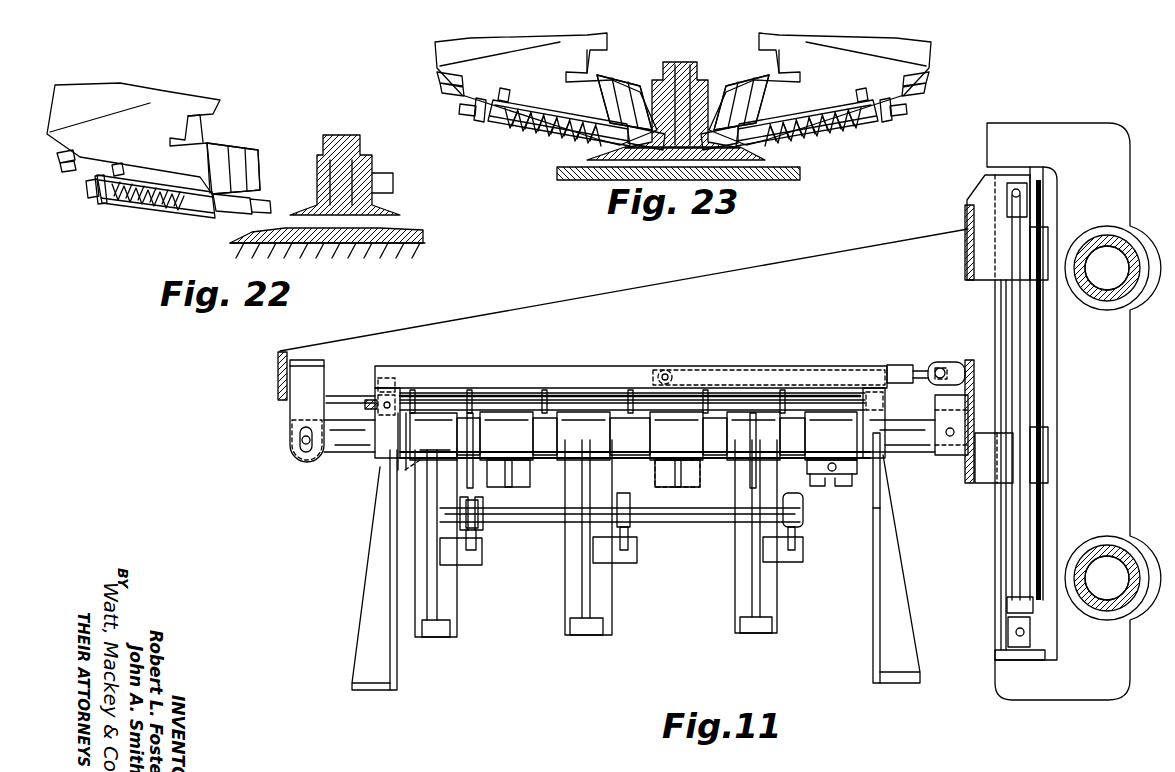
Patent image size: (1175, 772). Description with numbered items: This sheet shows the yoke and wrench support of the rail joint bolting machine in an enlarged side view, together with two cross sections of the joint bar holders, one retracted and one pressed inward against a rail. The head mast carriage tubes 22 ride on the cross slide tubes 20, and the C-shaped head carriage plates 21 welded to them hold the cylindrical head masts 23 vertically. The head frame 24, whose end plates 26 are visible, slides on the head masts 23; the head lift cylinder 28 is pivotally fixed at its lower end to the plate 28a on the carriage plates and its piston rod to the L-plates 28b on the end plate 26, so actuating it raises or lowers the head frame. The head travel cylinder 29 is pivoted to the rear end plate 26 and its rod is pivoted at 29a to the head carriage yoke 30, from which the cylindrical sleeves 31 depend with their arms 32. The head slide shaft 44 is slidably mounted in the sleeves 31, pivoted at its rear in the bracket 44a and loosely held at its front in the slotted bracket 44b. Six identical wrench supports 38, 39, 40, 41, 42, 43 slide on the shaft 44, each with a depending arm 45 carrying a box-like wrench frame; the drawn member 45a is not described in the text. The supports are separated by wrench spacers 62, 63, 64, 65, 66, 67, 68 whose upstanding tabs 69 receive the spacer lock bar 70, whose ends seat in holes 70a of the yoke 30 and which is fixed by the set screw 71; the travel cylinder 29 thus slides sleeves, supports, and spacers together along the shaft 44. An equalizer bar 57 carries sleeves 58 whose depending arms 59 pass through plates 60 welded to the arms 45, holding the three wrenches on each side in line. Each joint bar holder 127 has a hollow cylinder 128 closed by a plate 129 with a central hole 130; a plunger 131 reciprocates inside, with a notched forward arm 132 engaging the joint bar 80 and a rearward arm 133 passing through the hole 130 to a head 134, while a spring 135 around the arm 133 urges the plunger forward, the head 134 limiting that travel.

In FIG. 11, the cross slide tubes 20 is at (1118, 300).
In FIG. 11, the C-shaped head carriage plates 21 is at (1132, 367).
In FIG. 11, the head mast carriage tubes 22 is at (1104, 236).
In FIG. 11, the head masts 23 is at (1036, 200).
In FIG. 11, the head frame 24 is at (642, 284).
In FIG. 11, the end plates 26 is at (965, 225).
In FIG. 11, the head lift cylinder 28 is at (1010, 565).
In FIG. 11, the plate 28a is at (995, 655).
In FIG. 11, the L-plates 28b is at (985, 197).
In FIG. 11, the head travel cylinder 29 is at (902, 365).
In FIG. 11, the pivotal connection 29a is at (665, 370).
In FIG. 11, the head carriage yoke 30 is at (548, 366).
In FIG. 11, the cylindrical sleeves 31 is at (385, 456).
In FIG. 11, the arms 32 is at (398, 652).
In FIG. 11, the wrench support 38 is at (455, 437).
In FIG. 11, the wrench support 39 is at (531, 430).
In FIG. 11, the wrench support 40 is at (612, 432).
In FIG. 11, the wrench support 41 is at (700, 432).
In FIG. 11, the wrench support 42 is at (778, 432).
In FIG. 11, the wrench support 43 is at (858, 432).
In FIG. 11, the head slide shaft 44 is at (333, 462).
In FIG. 11, the bracket 44a is at (905, 450).
In FIG. 11, the slotted bracket 44b is at (290, 420).
In FIG. 11, the depending arm 45 is at (567, 590).
In FIG. 11, the support member 45a is at (410, 490).
In FIG. 11, the equalizer bar 57 is at (680, 522).
In FIG. 11, the sleeves 58 is at (808, 520).
In FIG. 11, the depending arm 59 is at (478, 545).
In FIG. 11, the plate 60 is at (462, 566).
In FIG. 11, the wrench spacer 62 is at (398, 470).
In FIG. 11, the wrench spacer 63 is at (485, 462).
In FIG. 11, the wrench spacer 64 is at (528, 462).
In FIG. 11, the wrench spacer 65 is at (632, 455).
In FIG. 11, the wrench spacer 66 is at (700, 462).
In FIG. 11, the wrench spacer 67 is at (815, 458).
In FIG. 11, the wrench spacer 68 is at (874, 462).
In FIG. 11, the tabs 69 is at (555, 400).
In FIG. 11, the spacer lock bar 70 is at (512, 400).
In FIG. 11, the holes 70a is at (396, 395).
In FIG. 11, the set screw 71 is at (384, 402).
In FIG. 22, the joint bar 80 is at (323, 158).
In FIG. 23, the joint bar 80 is at (657, 82).
In FIG. 22, the joint bar holder 127 is at (183, 216).
In FIG. 23, the joint bar holder 127 is at (550, 135).
In FIG. 22, the hollow cylinder 128 is at (203, 222).
In FIG. 23, the hollow cylinder 128 is at (700, 167).
In FIG. 22, the plate 129 is at (105, 196).
In FIG. 23, the plate 129 is at (492, 127).
In FIG. 22, the hole 130 is at (118, 173).
In FIG. 23, the hole 130 is at (864, 120).
In FIG. 22, the plunger 131 is at (247, 197).
In FIG. 23, the plunger 131 is at (770, 147).
In FIG. 22, the forwardly extending arm 132 is at (250, 209).
In FIG. 23, the forwardly extending arm 132 is at (597, 148).
In FIG. 22, the arm 133 is at (128, 204).
In FIG. 23, the arm 133 is at (492, 120).
In FIG. 22, the head 134 is at (96, 190).
In FIG. 23, the head 134 is at (892, 108).
In FIG. 22, the spring 135 is at (157, 210).
In FIG. 23, the spring 135 is at (847, 127).